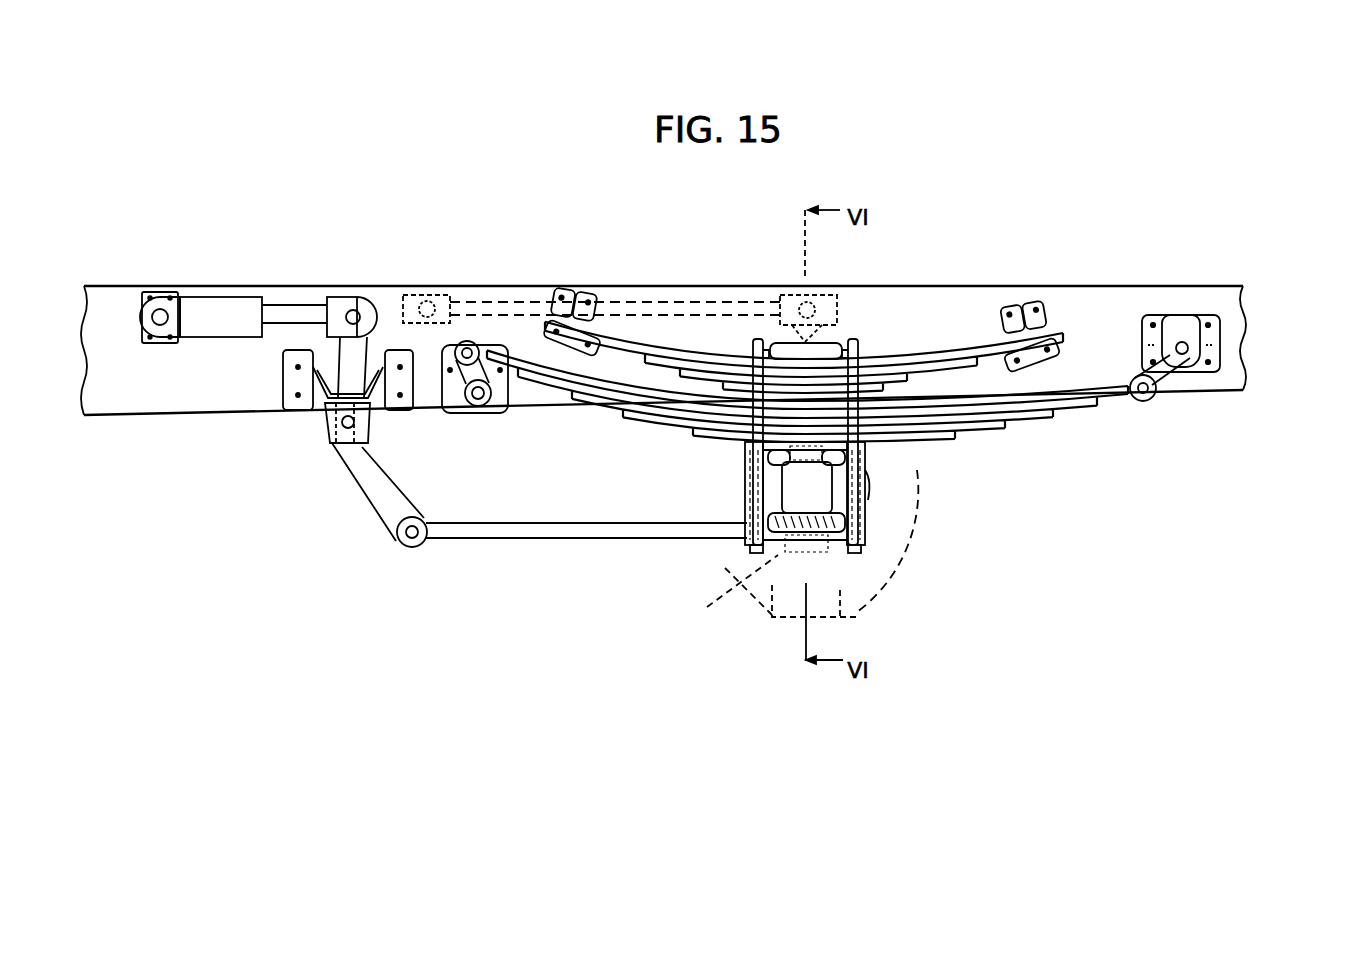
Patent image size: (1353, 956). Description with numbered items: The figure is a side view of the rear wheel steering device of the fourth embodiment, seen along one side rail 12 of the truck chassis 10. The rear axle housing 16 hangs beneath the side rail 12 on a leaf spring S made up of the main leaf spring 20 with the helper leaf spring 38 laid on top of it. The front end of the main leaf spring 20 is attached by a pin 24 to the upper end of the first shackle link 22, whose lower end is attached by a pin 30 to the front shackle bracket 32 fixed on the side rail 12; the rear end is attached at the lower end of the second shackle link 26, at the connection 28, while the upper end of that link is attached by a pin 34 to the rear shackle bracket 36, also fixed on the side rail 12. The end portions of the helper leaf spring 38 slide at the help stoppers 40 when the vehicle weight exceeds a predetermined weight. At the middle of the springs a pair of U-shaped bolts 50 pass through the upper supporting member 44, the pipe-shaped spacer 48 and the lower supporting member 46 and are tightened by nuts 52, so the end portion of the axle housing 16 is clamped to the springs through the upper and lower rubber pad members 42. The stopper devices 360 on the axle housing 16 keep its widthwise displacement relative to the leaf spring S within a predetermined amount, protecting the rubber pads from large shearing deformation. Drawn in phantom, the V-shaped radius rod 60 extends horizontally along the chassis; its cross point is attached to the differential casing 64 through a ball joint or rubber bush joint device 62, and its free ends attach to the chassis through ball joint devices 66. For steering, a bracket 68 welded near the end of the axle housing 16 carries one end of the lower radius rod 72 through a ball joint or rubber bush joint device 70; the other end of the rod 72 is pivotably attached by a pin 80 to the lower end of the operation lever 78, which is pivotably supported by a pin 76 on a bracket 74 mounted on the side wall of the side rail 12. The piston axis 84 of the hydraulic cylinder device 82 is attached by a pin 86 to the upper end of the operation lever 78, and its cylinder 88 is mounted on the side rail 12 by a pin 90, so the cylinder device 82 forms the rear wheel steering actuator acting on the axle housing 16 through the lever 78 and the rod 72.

The chassis 10 is at (120, 277).
The side rail 12 is at (110, 382).
The rear axle housing 16 is at (782, 494).
The main leaf spring 20 is at (1003, 433).
The first shackle link 22 is at (456, 382).
The pin 24 is at (470, 342).
The second shackle link 26 is at (1174, 372).
The rear shackle pin eye 28 is at (1143, 400).
The pin 30 is at (478, 406).
The front shackle bracket 32 is at (490, 406).
The pin 34 is at (1177, 335).
The rear shackle bracket 36 is at (1200, 316).
The helper leaf spring 38 is at (927, 348).
The help stopper 40 is at (580, 292).
The rubber pad member 42 is at (868, 484).
The upper supporting member 44 is at (745, 442).
The lower supporting member 46 is at (868, 528).
The spacer 48 is at (768, 464).
The U-shaped bolt 50 is at (752, 339).
The nut 52 is at (865, 546).
The radius rod 60 is at (692, 302).
The ball joint device or rubber bush joint device 62 is at (830, 296).
The differential casing 64 is at (761, 598).
The ball joint device 66 is at (428, 293).
The bracket 68 is at (818, 552).
The ball joint or rubber bush joint device 70 is at (706, 605).
The lower radius rod 72 is at (555, 540).
The bracket 74 is at (305, 408).
The pin 76 is at (343, 422).
The operation lever 78 is at (370, 304).
The pin 80 is at (398, 552).
The hydraulic cylinder device 82 is at (220, 288).
The piston axis 84 is at (290, 306).
The pin 86 is at (339, 300).
The cylinder 88 is at (202, 332).
The pin 90 is at (156, 293).
The stopper device 360 is at (868, 459).
The leaf spring S is at (1062, 370).